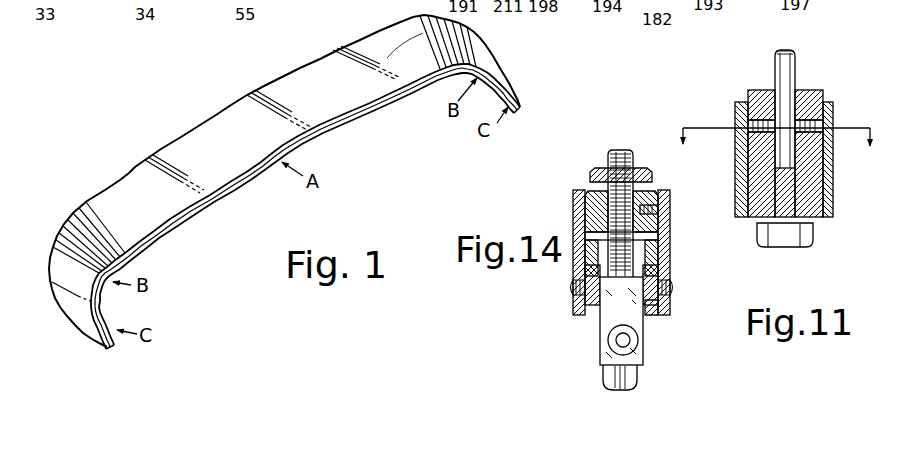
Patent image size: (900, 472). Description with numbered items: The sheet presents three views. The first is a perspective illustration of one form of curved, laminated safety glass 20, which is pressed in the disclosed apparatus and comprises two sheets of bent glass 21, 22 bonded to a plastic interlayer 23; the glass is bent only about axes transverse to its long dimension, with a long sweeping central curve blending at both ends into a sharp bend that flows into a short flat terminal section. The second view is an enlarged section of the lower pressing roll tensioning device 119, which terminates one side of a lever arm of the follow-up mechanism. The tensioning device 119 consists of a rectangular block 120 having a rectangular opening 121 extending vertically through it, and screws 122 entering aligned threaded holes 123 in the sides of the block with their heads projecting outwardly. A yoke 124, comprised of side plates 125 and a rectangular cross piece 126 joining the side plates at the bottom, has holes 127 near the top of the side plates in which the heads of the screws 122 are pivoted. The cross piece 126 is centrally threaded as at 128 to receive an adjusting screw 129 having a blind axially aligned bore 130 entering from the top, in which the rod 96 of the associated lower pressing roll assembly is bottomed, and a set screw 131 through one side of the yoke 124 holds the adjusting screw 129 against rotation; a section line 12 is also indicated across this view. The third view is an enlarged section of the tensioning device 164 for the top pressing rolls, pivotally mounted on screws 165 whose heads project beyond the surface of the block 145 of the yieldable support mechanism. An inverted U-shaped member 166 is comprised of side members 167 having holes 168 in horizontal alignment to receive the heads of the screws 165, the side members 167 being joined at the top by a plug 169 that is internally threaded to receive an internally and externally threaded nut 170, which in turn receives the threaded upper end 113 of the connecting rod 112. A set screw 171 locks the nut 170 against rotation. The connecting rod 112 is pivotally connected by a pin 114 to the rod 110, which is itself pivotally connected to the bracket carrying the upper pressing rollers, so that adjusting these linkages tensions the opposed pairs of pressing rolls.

In FIG. 1, the curved laminated safety glass 20 is at (205, 104).
In FIG. 1, the sheet of bent glass 21 is at (93, 326).
In FIG. 1, the sheet of bent glass 22 is at (150, 245).
In FIG. 1, the plastic interlayer 23 is at (197, 212).
In FIG. 11, the section line 12 is at (779, 152).
In FIG. 11, the rod 96 is at (790, 55).
In FIG. 11, the pressing roll tensioning device 119 is at (758, 70).
In FIG. 11, the rectangular block 120 is at (824, 104).
In FIG. 11, the rectangular opening 121 is at (802, 92).
In FIG. 11, the screws 122 is at (748, 125).
In FIG. 11, the threaded holes 123 is at (752, 95).
In FIG. 11, the yoke 124 is at (835, 207).
In FIG. 11, the side plates 125 is at (740, 151).
In FIG. 11, the rectangular cross piece 126 is at (752, 216).
In FIG. 11, the holes 127 is at (735, 112).
In FIG. 11, the threaded portion 128 is at (815, 216).
In FIG. 11, the adjusting screw 129 is at (786, 242).
In FIG. 11, the blind axially aligned bore 130 is at (750, 170).
In FIG. 11, the set screw 131 is at (742, 192).
In FIG. 14, the rod 110 is at (612, 376).
In FIG. 14, the connecting rod 112 is at (600, 318).
In FIG. 14, the threaded upper end 113 is at (618, 158).
In FIG. 14, the pin 114 is at (616, 341).
In FIG. 14, the block 145 is at (660, 318).
In FIG. 14, the tensioning device 164 is at (560, 176).
In FIG. 14, the screws 165 is at (590, 263).
In FIG. 14, the inverted U-shaped member 166 is at (572, 200).
In FIG. 14, the side members 167 is at (572, 216).
In FIG. 14, the holes 168 is at (572, 288).
In FIG. 14, the plug 169 is at (590, 192).
In FIG. 14, the nut 170 is at (600, 168).
In FIG. 14, the set screw 171 is at (660, 208).